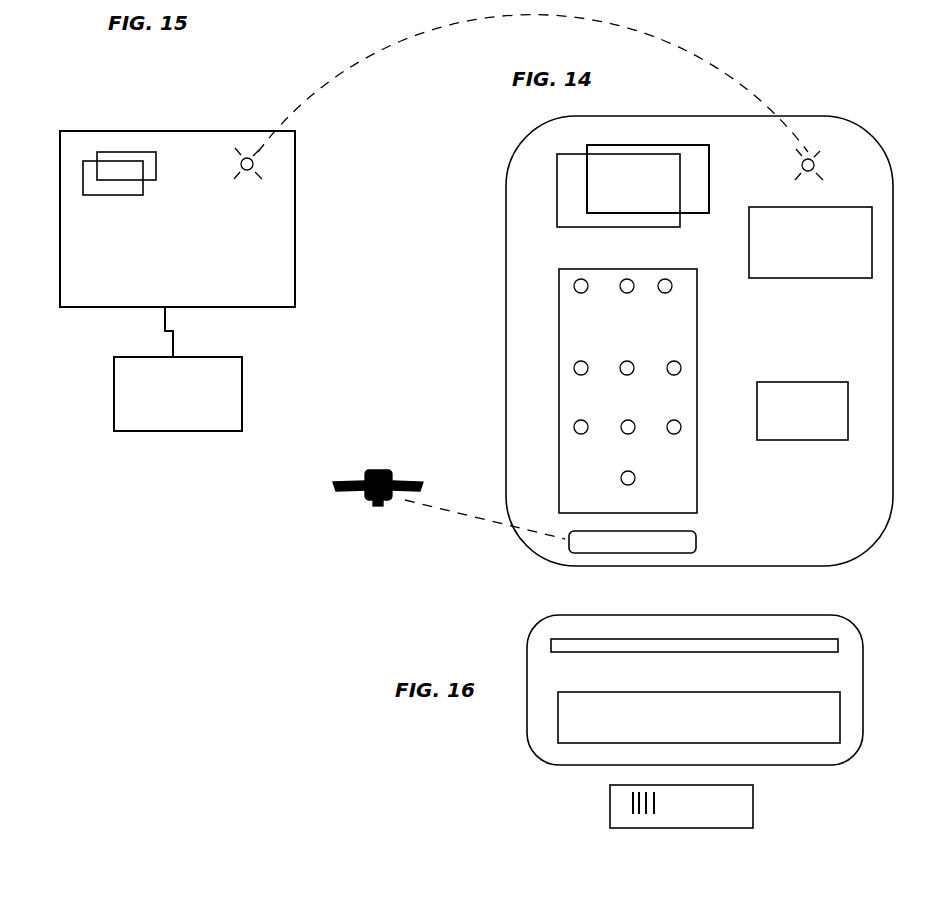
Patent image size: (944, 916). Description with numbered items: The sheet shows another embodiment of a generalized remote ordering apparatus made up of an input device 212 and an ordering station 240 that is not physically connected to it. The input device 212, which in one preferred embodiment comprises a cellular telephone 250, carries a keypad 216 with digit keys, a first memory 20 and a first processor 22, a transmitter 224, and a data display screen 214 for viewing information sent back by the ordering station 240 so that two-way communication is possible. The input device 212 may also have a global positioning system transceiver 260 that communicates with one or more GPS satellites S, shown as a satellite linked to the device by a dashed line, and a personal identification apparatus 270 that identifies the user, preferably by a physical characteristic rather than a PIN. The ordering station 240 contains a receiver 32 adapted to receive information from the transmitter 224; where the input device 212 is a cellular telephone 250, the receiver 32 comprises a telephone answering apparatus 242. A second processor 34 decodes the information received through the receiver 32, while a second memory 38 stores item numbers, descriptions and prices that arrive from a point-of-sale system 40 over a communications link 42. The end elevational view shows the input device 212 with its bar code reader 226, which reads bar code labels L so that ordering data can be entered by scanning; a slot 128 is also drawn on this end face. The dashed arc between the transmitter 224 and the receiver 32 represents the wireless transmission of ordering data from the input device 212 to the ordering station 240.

In FIG. 15, the ordering station 240 is at (203, 132).
In FIG. 15, the second memory 38 is at (96, 165).
In FIG. 15, the second processor 34 is at (143, 160).
In FIG. 15, the receiver 32 is at (307, 163).
In FIG. 15, the telephone answering apparatus 242 is at (263, 163).
In FIG. 15, the communications link 42 is at (165, 336).
In FIG. 15, the point-of-sale system 40 is at (152, 386).
In FIG. 14, the input device 212 is at (699, 302).
In FIG. 14, the cellular telephone 250 is at (813, 115).
In FIG. 14, the first processor 22 is at (566, 183).
In FIG. 14, the first memory 20 is at (618, 153).
In FIG. 14, the transmitter 224 is at (817, 158).
In FIG. 14, the display screen 214 is at (818, 251).
In FIG. 14, the keypad 216 is at (698, 312).
In FIG. 14, the personal identification apparatus 270 is at (777, 395).
In FIG. 14, the global positioning system transceiver 260 is at (687, 540).
In FIG. 14, the GPS satellite S is at (372, 465).
In FIG. 16, the slot 128 is at (821, 640).
In FIG. 16, the bar code reader 226 is at (812, 718).
In FIG. 16, the bar code label L is at (610, 812).